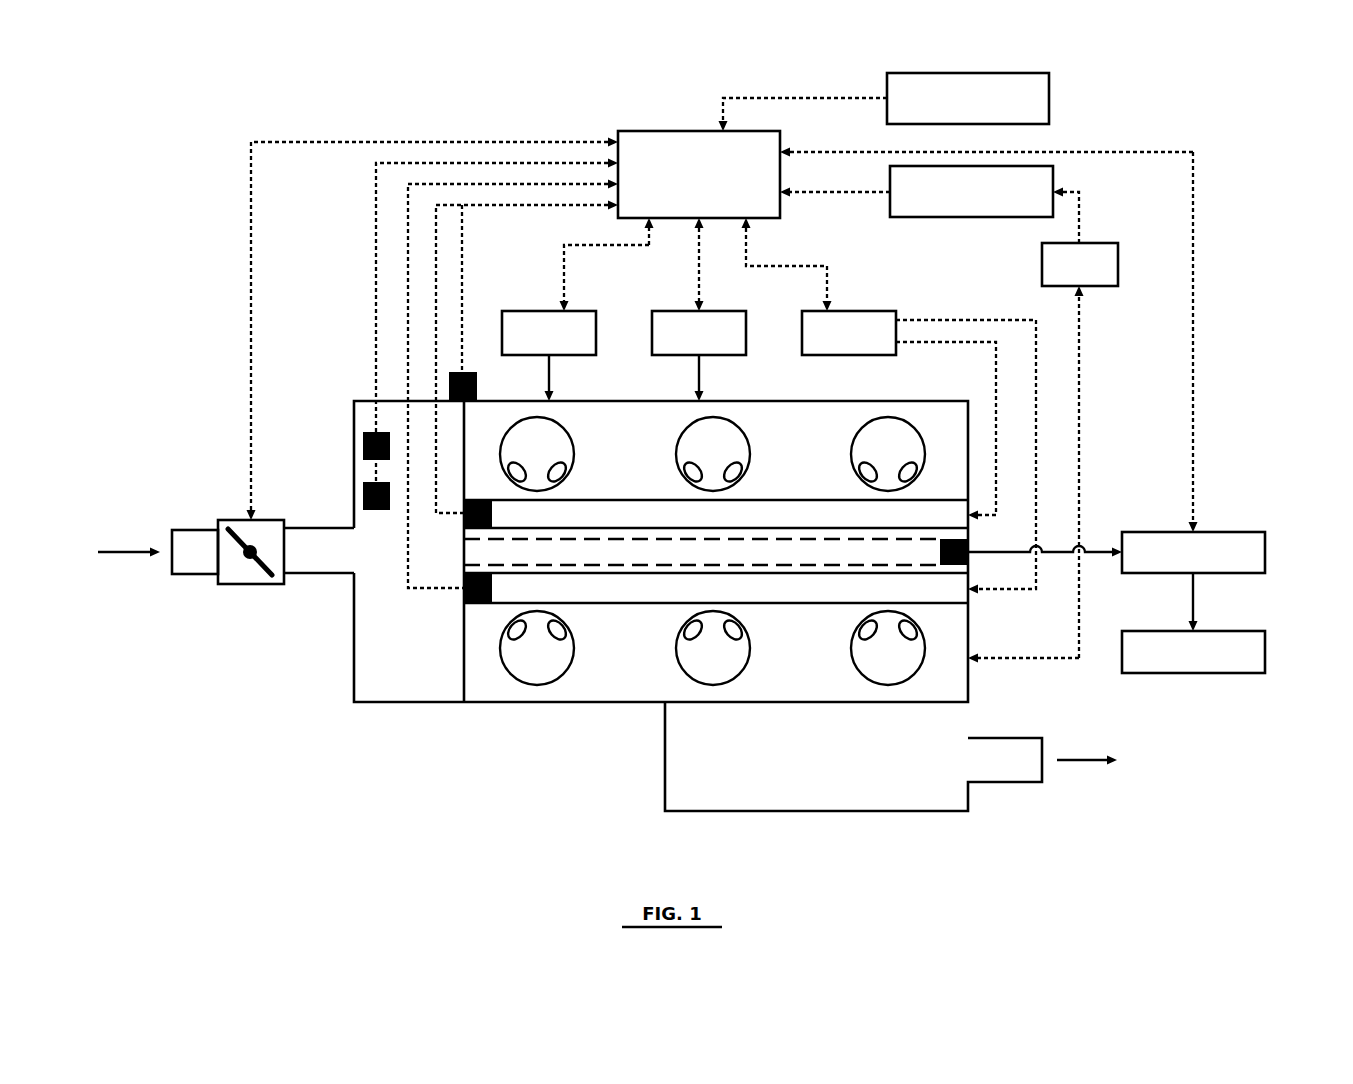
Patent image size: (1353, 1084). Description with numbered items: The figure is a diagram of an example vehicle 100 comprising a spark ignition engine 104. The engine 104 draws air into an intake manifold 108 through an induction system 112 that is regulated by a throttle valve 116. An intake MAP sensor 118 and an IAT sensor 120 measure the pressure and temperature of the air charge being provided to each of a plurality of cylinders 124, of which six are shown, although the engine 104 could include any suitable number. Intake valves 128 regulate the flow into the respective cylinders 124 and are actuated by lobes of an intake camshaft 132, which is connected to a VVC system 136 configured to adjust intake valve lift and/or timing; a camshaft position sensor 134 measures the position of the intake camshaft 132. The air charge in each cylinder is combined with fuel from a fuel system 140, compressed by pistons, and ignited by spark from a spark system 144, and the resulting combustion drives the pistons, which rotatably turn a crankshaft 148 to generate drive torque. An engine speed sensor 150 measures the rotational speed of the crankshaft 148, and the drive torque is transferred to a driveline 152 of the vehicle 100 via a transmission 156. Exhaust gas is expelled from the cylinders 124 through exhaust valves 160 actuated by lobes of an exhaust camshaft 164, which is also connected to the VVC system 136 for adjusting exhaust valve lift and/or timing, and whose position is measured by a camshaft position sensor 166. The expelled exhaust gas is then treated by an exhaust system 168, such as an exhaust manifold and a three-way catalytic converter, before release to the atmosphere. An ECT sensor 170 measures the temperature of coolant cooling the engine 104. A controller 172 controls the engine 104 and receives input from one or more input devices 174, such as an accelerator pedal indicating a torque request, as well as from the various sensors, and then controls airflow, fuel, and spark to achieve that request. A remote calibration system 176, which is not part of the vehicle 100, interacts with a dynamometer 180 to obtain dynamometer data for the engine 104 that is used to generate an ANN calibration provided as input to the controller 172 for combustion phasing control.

The vehicle 100 is at (308, 822).
The engine 104 is at (740, 514).
The intake manifold 108 is at (411, 702).
The induction system 112 is at (194, 530).
The throttle valve 116 is at (253, 584).
The intake MAP sensor 118 is at (363, 445).
The IAT sensor 120 is at (376, 510).
The cylinders 124 is at (525, 685).
The intake valves 128 is at (700, 633).
The intake camshaft 132 is at (716, 514).
The camshaft position sensor 134 is at (486, 528).
The VVC system 136 is at (866, 311).
The fuel system 140 is at (533, 311).
The spark system 144 is at (740, 355).
The crankshaft 148 is at (702, 552).
The engine speed sensor 150 is at (953, 565).
The driveline 152 is at (1265, 652).
The transmission 156 is at (1265, 552).
The exhaust valves 160 is at (905, 633).
The exhaust camshaft 164 is at (716, 588).
The camshaft position sensor 166 is at (477, 603).
The exhaust system 168 is at (817, 811).
The ECT sensor 170 is at (477, 383).
The controller 172 is at (661, 131).
The input devices 174 is at (1049, 98).
The remote calibration system 176 is at (970, 217).
The dynamometer 180 is at (1098, 286).